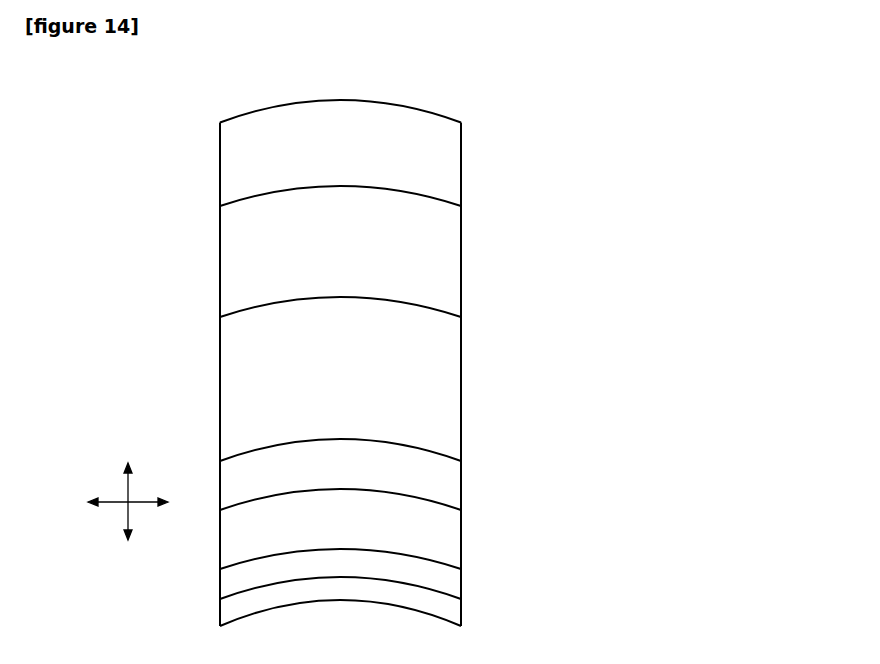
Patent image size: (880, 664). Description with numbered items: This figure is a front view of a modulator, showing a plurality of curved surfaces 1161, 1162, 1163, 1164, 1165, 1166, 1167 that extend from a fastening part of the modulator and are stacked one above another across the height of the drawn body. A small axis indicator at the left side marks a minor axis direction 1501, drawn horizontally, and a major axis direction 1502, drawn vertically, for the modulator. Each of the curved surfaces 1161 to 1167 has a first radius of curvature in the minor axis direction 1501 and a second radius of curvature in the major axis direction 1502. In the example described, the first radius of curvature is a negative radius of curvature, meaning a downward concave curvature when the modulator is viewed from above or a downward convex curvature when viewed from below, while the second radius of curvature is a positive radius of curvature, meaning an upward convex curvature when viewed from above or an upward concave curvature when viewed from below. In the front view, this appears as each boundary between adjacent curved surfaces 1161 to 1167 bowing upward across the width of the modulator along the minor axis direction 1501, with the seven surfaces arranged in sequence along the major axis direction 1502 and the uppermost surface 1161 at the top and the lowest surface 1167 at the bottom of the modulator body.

The curved surface 1161 is at (450, 158).
The curved surface 1162 is at (450, 255).
The curved surface 1163 is at (450, 393).
The curved surface 1164 is at (450, 483).
The curved surface 1165 is at (450, 539).
The curved surface 1166 is at (450, 583).
The curved surface 1167 is at (450, 611).
The minor axis direction 1501 is at (107, 505).
The major axis direction 1502 is at (128, 480).